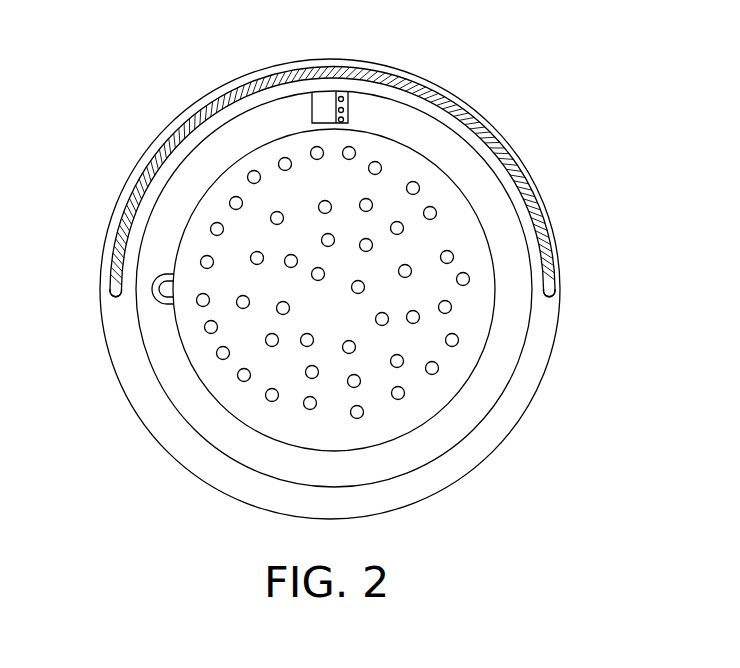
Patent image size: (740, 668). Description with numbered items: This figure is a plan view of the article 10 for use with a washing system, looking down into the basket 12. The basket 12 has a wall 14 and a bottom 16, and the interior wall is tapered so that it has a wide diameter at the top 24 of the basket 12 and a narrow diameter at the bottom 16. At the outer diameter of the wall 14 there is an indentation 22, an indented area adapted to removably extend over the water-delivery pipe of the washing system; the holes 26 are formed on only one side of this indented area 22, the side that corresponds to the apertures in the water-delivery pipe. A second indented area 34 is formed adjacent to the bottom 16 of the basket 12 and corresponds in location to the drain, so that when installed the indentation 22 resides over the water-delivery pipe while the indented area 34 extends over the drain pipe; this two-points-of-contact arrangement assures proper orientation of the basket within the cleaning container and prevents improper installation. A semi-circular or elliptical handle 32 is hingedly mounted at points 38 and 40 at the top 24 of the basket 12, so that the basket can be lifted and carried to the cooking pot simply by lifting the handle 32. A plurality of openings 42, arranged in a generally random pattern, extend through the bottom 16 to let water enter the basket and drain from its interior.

The article 10 is at (612, 204).
The basket 12 is at (538, 393).
The wall 14 is at (443, 126).
The bottom 16 is at (381, 239).
The indentation 22 is at (338, 69).
The top 24 is at (358, 289).
The holes 26 is at (342, 89).
The handle 32 is at (518, 158).
The indented area 34 is at (150, 301).
The hinge point 38 is at (559, 300).
The hinge point 40 is at (111, 288).
The openings 42 is at (277, 211).